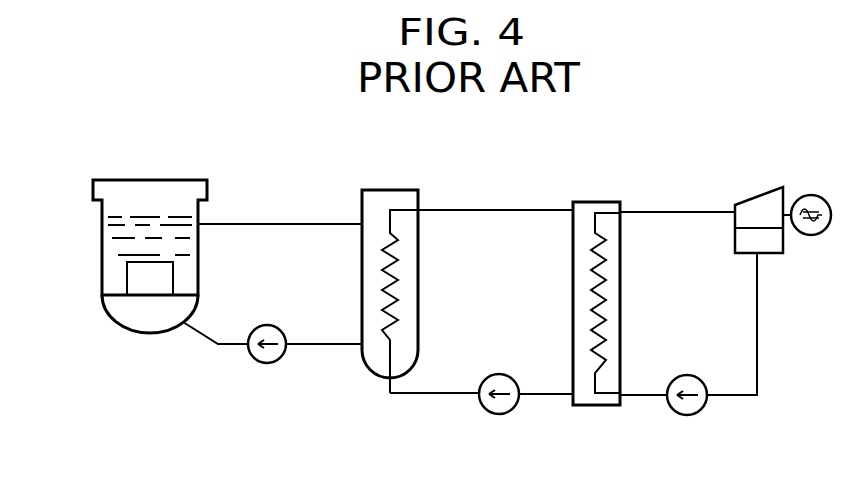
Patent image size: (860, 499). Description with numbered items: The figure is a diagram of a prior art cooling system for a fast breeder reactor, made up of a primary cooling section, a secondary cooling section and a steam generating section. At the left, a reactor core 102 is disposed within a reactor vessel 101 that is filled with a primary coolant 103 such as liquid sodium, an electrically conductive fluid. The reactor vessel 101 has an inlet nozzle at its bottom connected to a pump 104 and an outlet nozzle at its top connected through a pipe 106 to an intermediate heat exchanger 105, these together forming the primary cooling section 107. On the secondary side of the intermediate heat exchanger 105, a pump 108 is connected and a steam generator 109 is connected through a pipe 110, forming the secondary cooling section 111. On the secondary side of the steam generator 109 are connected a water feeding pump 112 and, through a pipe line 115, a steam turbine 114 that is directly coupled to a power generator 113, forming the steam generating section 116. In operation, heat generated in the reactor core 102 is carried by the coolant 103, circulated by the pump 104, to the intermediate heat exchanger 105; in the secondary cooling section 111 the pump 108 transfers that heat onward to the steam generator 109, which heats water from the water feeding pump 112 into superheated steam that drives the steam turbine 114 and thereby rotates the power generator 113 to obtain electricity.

The reactor vessel 101 is at (102, 280).
The reactor core 102 is at (148, 297).
The primary coolant 103 is at (140, 227).
The pump 104 is at (260, 365).
The intermediate heat exchanger 105 is at (383, 188).
The pipe 106 is at (283, 220).
The primary cooling section 107 is at (307, 283).
The pump 108 is at (482, 407).
The steam generator 109 is at (592, 200).
The pipe 110 is at (485, 208).
The secondary cooling section 111 is at (513, 283).
The water feeding pump 112 is at (680, 413).
The power generator 113 is at (807, 195).
The steam turbine 114 is at (748, 202).
The pipe line 115 is at (672, 210).
The steam generating section 116 is at (700, 287).